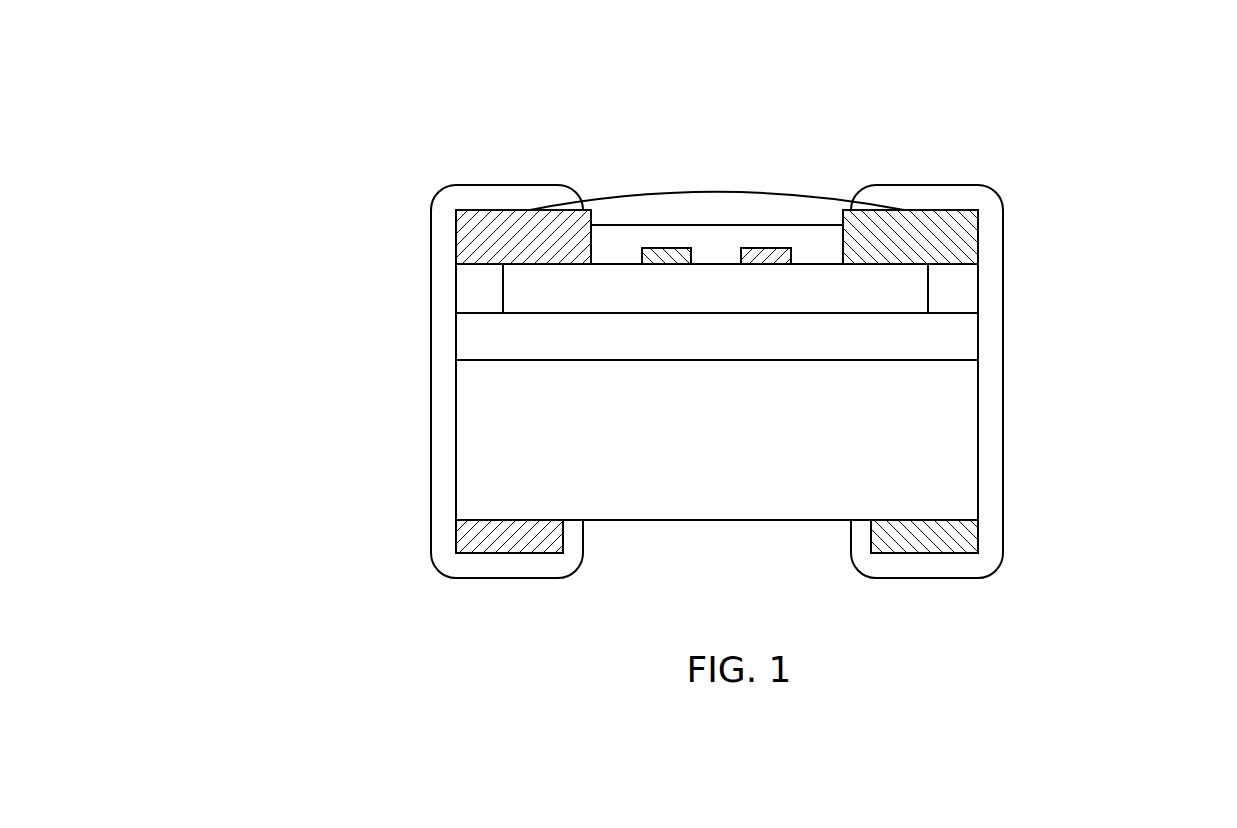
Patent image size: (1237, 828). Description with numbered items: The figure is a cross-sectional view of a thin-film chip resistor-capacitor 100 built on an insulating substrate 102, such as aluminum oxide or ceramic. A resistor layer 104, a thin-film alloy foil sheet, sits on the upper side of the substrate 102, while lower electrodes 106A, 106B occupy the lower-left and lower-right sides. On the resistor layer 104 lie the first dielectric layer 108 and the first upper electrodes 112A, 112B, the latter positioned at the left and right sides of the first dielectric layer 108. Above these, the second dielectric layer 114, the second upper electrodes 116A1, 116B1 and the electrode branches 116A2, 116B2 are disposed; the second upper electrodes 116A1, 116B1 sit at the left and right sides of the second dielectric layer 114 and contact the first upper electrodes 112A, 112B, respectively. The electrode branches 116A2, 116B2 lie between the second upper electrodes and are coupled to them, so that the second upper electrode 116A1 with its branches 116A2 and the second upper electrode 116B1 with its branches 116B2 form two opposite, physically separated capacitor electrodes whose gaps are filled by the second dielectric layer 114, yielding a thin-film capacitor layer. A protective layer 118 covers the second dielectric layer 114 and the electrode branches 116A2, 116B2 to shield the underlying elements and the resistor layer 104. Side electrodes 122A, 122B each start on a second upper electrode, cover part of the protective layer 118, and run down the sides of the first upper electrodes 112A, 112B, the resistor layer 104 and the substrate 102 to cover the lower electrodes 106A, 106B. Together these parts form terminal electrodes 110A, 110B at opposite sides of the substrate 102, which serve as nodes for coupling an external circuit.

The thin-film chip resistor-capacitor 100 is at (337, 87).
The substrate 102 is at (692, 455).
The resistor layer 104 is at (692, 352).
The lower electrode 106A is at (462, 540).
The lower electrode 106B is at (972, 540).
The first dielectric layer 108 is at (713, 278).
The terminal electrode 110A is at (295, 222).
The terminal electrode 110B is at (1119, 222).
The first upper electrode 112A is at (465, 291).
The first upper electrode 112B is at (969, 291).
The second dielectric layer 114 is at (612, 237).
The second upper electrode 116A1 is at (458, 240).
The electrode branch 116A2 is at (767, 255).
The second upper electrode 116B1 is at (976, 240).
The electrode branch 116B2 is at (667, 255).
The protective layer 118 is at (828, 207).
The side electrode 122A is at (442, 408).
The side electrode 122B is at (992, 408).